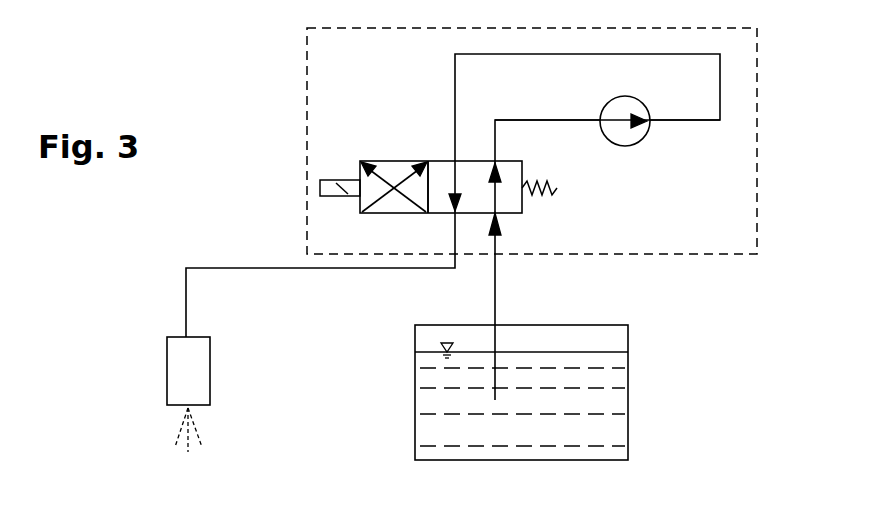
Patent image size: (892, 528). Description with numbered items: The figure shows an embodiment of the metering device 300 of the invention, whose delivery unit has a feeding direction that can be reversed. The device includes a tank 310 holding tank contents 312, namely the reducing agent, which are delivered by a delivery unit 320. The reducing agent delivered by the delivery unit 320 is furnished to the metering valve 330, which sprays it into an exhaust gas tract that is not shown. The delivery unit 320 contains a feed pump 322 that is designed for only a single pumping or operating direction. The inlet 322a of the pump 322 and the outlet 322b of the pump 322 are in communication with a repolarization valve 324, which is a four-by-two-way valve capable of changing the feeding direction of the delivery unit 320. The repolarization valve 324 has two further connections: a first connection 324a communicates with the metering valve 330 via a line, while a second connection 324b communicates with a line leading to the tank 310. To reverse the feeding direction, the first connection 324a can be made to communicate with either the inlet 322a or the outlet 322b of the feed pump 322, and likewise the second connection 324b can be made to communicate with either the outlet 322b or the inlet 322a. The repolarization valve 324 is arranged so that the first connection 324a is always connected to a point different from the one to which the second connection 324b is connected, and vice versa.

The metering device 300 is at (268, 476).
The tank 310 is at (630, 378).
The tank contents 312 is at (600, 428).
The delivery unit 320 is at (307, 68).
The feed pump 322 is at (642, 140).
The inlet of the pump 322a is at (540, 119).
The outlet of the pump 322b is at (687, 119).
The repolarization valve 324 is at (522, 199).
The first connection of the repolarization valve 324a is at (445, 216).
The second connection of the repolarization valve 324b is at (500, 223).
The metering valve 330 is at (211, 368).